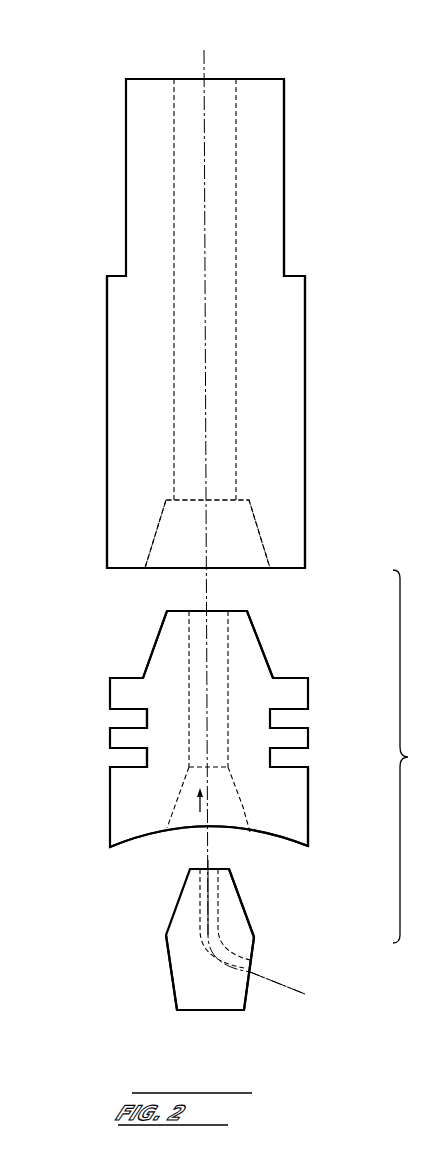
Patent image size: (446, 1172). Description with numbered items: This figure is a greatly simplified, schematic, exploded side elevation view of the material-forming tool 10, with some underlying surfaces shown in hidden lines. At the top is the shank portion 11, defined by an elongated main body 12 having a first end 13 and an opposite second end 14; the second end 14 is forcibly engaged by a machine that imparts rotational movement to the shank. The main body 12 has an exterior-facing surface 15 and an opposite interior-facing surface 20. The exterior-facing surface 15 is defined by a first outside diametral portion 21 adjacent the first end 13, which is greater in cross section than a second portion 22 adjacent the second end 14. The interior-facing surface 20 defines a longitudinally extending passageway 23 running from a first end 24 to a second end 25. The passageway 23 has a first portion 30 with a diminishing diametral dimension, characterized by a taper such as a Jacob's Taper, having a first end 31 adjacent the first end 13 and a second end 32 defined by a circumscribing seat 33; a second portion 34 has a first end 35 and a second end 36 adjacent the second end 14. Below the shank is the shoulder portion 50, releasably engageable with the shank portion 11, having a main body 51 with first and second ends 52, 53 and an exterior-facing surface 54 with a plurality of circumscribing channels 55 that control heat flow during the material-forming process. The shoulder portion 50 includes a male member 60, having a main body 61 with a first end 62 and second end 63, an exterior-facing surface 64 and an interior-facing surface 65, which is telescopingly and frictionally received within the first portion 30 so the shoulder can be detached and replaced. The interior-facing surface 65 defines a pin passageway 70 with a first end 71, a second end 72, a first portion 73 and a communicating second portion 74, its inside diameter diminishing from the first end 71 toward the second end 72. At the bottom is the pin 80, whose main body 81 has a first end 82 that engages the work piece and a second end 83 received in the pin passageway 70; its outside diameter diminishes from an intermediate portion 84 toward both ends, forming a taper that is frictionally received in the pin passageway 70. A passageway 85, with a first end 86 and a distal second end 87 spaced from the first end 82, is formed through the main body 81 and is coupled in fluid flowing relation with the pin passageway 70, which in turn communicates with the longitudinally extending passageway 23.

The material-forming tool 10 is at (76, 282).
The shank portion 11 is at (257, 263).
The main body 12 is at (100, 352).
The first end 13 is at (308, 562).
The second end 14 is at (285, 88).
The exterior-facing surface 15 is at (307, 310).
The interior-facing surface 20 is at (175, 426).
The first outside diametral portion 21 is at (107, 498).
The second portion 22 is at (285, 182).
The longitudinally extending passageway 23 is at (227, 380).
The first end 24 is at (145, 565).
The second end 25 is at (236, 97).
The first portion 30 is at (255, 530).
The first end 31 is at (265, 558).
The second end 32 is at (250, 500).
The circumscribing seat 33 is at (165, 500).
The second portion 34 is at (237, 135).
The first end 35 is at (247, 497).
The second end 36 is at (173, 97).
The shoulder portion 50 is at (42, 900).
The main body 51 is at (298, 783).
The first end 52 is at (308, 836).
The second end 53 is at (308, 677).
The exterior-facing surface 54 is at (110, 690).
The circumscribing channels 55 is at (119, 758).
The male member 60 is at (155, 619).
The main body 61 is at (250, 666).
The first end 62 is at (143, 677).
The second end 63 is at (167, 611).
The exterior-facing surface 64 is at (258, 631).
The interior-facing surface 65 is at (200, 735).
The pin passageway 70 is at (203, 797).
The first end 71 is at (243, 805).
The second end 72 is at (232, 607).
The first portion 73 is at (167, 828).
The second portion 74 is at (195, 655).
The pin 80 is at (153, 1022).
The main body 81 is at (183, 983).
The first end 82 is at (249, 999).
The second end 83 is at (235, 882).
The intermediate portion 84 is at (255, 937).
The passageway 85 is at (212, 946).
The first end 86 is at (195, 887).
The second end 87 is at (298, 979).